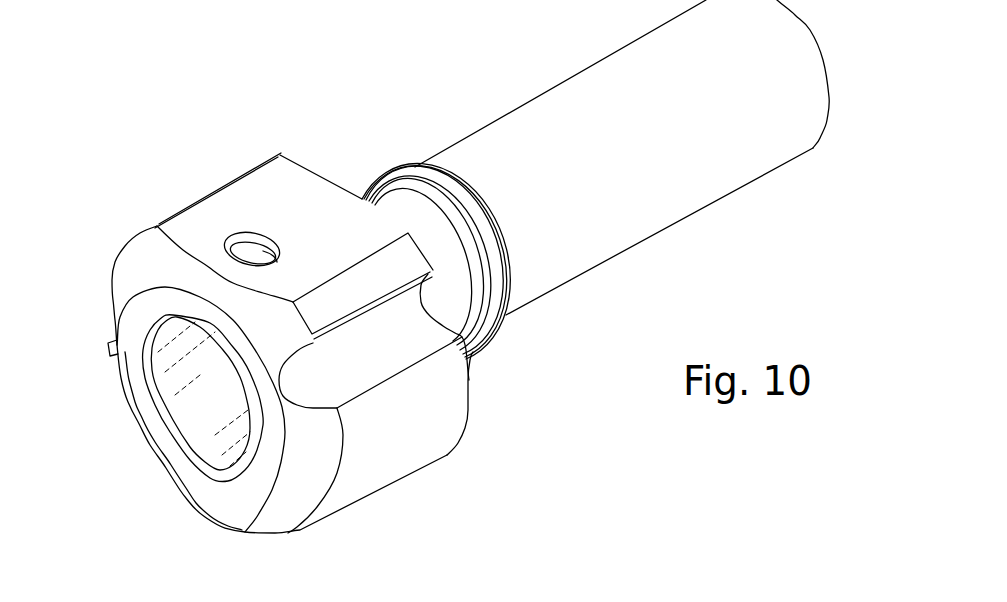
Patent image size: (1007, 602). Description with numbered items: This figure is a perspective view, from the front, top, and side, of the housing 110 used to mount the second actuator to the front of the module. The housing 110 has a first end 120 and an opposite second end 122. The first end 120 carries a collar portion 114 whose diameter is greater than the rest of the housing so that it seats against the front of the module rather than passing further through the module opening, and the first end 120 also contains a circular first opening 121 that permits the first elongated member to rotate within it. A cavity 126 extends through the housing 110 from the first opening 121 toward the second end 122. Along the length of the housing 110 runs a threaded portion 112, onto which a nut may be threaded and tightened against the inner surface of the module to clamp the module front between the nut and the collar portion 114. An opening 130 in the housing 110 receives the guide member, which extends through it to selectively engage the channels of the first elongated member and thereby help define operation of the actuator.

The housing 110 is at (154, 96).
The threaded portion 112 is at (404, 156).
The collar portion 114 is at (250, 185).
The first end 120 is at (112, 277).
The first opening 121 is at (150, 405).
The second end 122 is at (836, 58).
The cavity 126 is at (205, 407).
The opening 130 is at (282, 253).